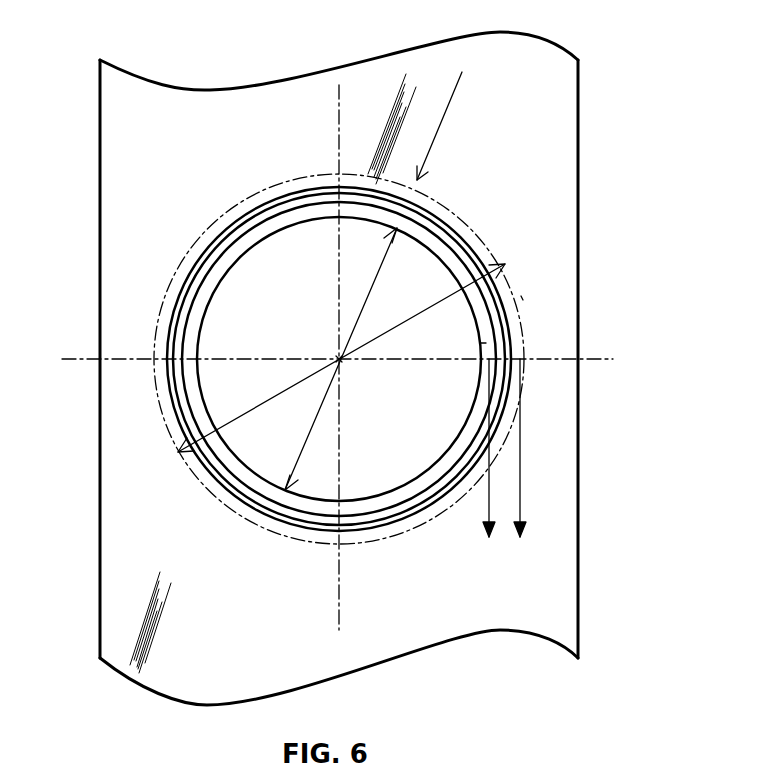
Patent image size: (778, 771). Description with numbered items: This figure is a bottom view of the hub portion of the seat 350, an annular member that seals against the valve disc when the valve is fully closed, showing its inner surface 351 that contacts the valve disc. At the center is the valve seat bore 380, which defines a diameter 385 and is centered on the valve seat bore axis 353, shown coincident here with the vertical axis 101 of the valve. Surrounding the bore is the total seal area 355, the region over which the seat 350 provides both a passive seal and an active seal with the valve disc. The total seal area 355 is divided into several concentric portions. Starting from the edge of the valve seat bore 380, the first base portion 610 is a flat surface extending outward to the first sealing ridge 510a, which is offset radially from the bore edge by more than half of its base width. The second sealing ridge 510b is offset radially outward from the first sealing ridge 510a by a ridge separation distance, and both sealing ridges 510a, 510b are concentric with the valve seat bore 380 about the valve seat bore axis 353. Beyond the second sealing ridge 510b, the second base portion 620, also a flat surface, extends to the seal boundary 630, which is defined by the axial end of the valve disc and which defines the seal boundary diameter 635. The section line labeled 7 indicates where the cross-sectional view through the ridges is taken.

The seat 350 is at (205, 57).
The inner surface 351 is at (558, 185).
The total seal area 355 is at (445, 118).
The valve seat bore 380 is at (233, 278).
The diameter 385 is at (297, 438).
The first sealing ridge 510a is at (285, 215).
The second sealing ridge 510b is at (272, 197).
The first base portion 610 is at (190, 401).
The second base portion 620 is at (368, 540).
The seal boundary 630 is at (521, 296).
The seal boundary diameter 635 is at (483, 343).
The vertical axis 101 is at (402, 390).
The valve seat bore axis 353 is at (342, 362).
The section line 7- 7 is at (505, 465).